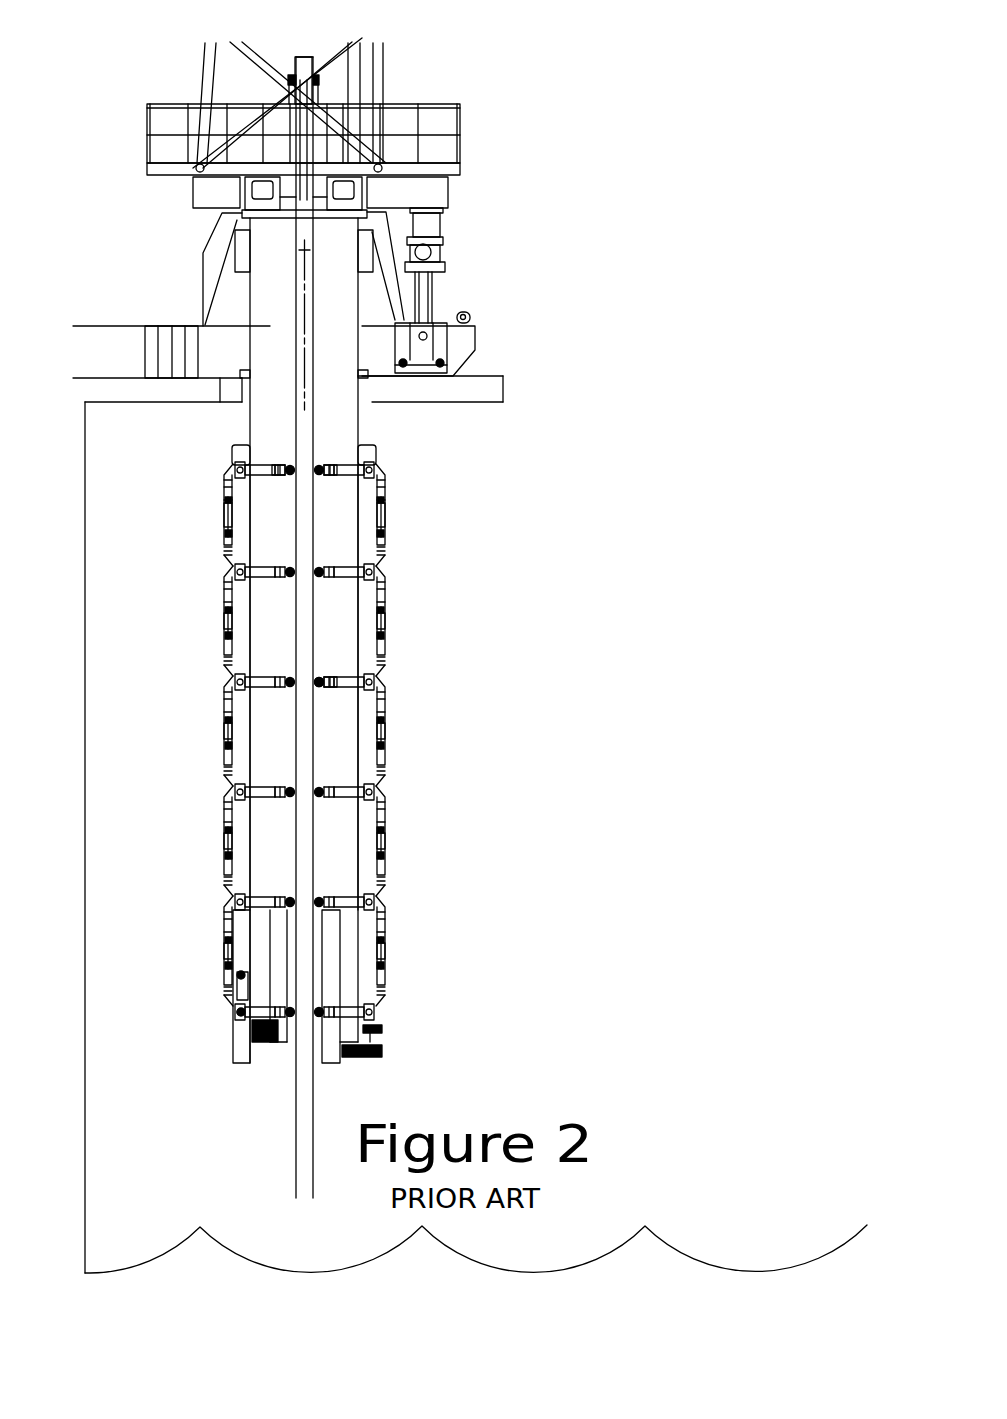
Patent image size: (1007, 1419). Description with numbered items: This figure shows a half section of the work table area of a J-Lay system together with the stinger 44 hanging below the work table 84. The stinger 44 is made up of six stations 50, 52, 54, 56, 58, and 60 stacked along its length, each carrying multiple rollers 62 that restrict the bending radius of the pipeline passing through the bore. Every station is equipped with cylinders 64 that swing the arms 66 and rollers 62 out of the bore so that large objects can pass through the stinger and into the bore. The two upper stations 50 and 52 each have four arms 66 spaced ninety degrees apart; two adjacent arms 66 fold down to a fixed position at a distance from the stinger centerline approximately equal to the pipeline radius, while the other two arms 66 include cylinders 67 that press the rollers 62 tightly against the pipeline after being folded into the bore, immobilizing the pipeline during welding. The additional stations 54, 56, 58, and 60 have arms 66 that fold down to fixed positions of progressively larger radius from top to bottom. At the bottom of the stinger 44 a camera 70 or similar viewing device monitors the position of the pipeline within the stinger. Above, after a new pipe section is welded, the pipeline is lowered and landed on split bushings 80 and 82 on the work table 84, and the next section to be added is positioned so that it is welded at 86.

The stinger 44 is at (423, 515).
The station 50 is at (397, 465).
The station 52 is at (397, 568).
The station 54 is at (397, 680).
The station 56 is at (397, 793).
The station 58 is at (397, 898).
The station 60 is at (397, 1005).
The roller 62 is at (323, 672).
The cylinder 64 is at (397, 752).
The arm 66 is at (267, 462).
The cylinder 67 is at (340, 465).
The camera 70 is at (397, 1030).
The split bushing 80 is at (313, 104).
The split bushing 82 is at (343, 183).
The work table 84 is at (427, 173).
The weld location 86 is at (308, 55).